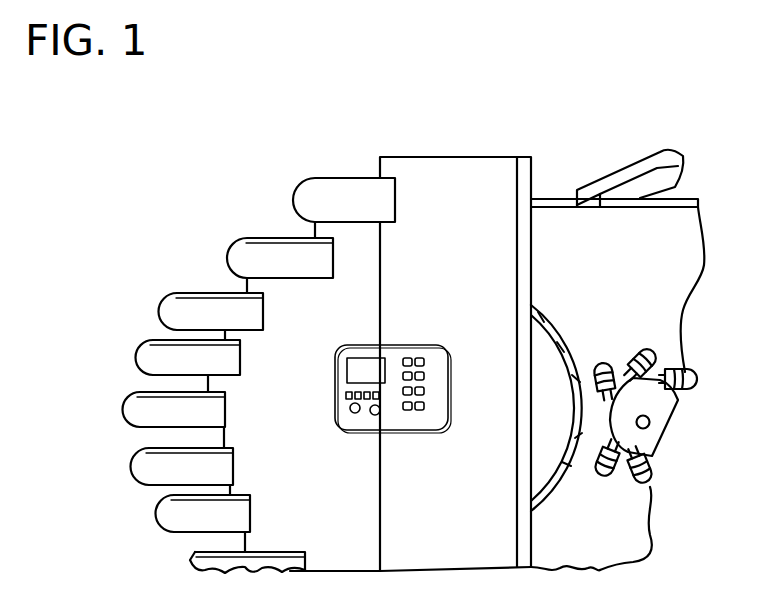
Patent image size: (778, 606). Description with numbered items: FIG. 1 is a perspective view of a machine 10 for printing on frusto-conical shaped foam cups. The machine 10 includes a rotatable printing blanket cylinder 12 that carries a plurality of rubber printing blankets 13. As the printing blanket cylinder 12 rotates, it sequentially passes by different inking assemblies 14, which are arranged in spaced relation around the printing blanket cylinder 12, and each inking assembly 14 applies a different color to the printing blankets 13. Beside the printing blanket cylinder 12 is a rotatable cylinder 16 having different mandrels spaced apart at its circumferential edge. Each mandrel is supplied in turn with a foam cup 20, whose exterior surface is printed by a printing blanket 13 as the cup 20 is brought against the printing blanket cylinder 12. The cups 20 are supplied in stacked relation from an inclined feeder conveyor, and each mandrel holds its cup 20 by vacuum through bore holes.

The machine 10 is at (193, 200).
The rotatable printing blanket cylinder 12 is at (542, 340).
The rubber printing blankets 13 is at (561, 343).
The inking assemblies 14 is at (315, 200).
The rotatable cylinder 16 is at (655, 406).
The foam cup 20 is at (700, 373).